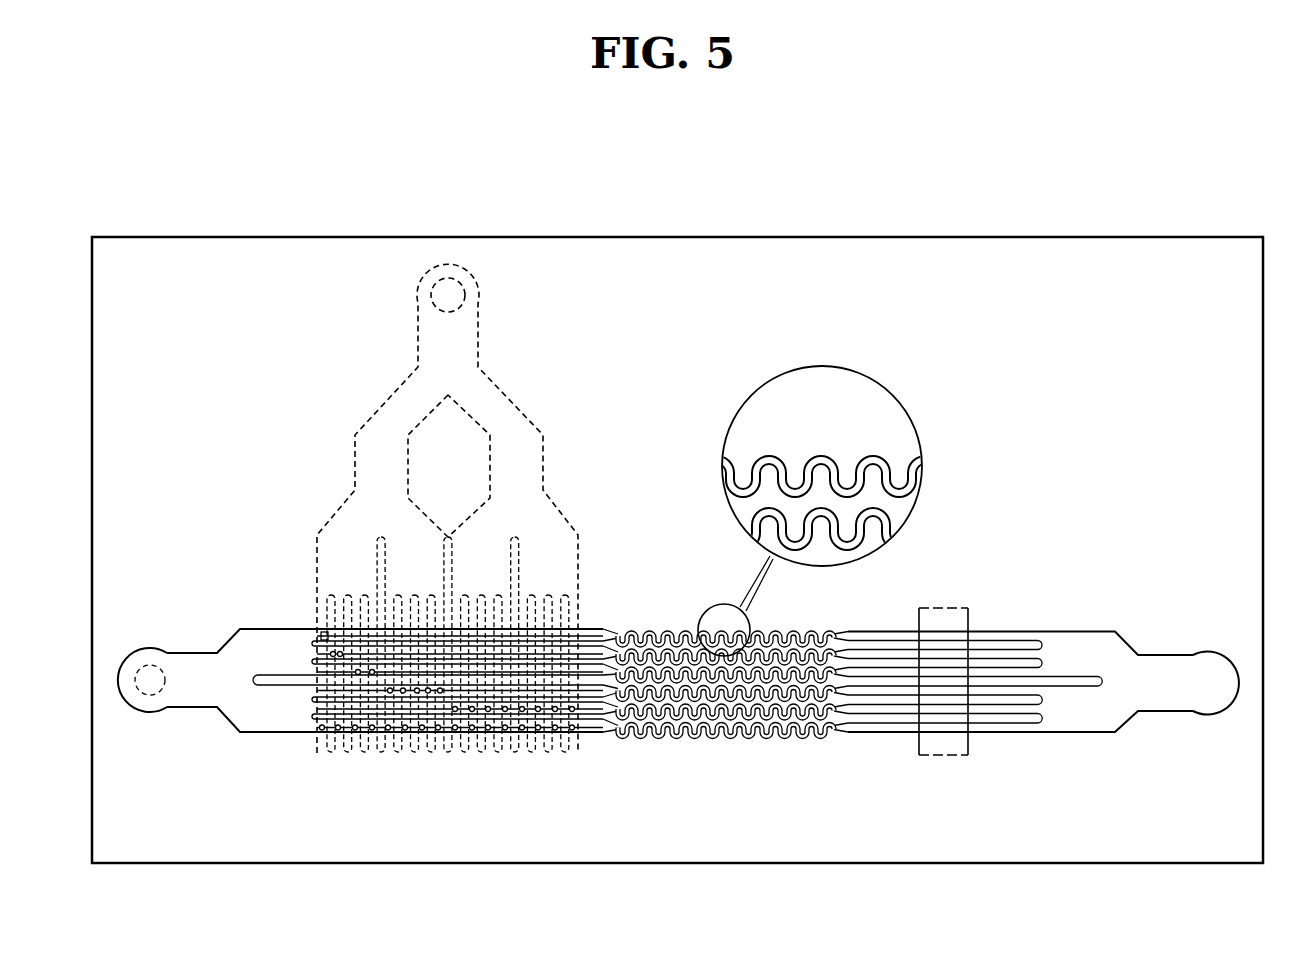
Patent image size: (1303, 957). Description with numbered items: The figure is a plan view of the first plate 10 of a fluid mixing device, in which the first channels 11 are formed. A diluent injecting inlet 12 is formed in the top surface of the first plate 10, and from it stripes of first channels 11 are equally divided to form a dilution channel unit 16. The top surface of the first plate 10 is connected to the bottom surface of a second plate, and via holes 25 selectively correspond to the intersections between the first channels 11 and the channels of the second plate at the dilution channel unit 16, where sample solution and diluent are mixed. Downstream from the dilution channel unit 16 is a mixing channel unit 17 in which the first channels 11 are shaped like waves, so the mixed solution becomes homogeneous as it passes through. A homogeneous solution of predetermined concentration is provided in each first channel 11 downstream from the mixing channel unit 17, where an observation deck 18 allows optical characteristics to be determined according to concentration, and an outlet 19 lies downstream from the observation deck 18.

The first plate 10 is at (166, 293).
The first channels 11 is at (594, 631).
The diluent injecting inlet 12 is at (143, 688).
The dilution channel unit 16 is at (580, 770).
The mixing channel unit 17 is at (840, 770).
The observation deck 18 is at (943, 757).
The outlet 19 is at (1205, 708).
The via holes 25 is at (358, 667).